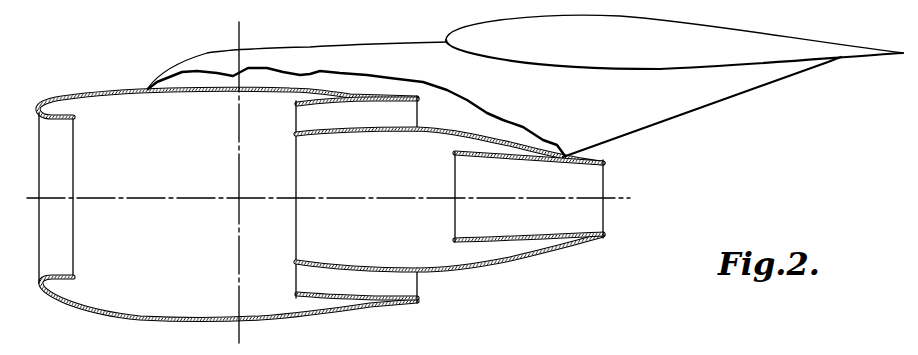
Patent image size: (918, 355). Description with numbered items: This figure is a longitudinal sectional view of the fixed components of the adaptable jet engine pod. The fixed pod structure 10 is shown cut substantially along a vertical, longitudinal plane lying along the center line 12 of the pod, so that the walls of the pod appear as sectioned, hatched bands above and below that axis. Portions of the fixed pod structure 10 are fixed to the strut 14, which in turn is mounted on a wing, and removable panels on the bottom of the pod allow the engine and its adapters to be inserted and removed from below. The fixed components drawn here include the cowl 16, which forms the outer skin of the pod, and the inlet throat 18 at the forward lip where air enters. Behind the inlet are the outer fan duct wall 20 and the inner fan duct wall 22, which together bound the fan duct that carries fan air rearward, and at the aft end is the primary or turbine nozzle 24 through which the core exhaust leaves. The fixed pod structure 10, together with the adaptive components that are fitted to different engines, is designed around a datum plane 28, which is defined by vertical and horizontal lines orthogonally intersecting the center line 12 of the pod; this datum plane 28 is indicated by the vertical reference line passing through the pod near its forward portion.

The fixed pod structure 10 is at (227, 170).
The center line 12 is at (118, 197).
The strut 14 is at (373, 58).
The cowl 16 is at (73, 98).
The inlet throat 18 is at (72, 119).
The outer fan duct wall 20 is at (306, 106).
The inner fan duct wall 22 is at (310, 133).
The primary or turbine nozzle 24 is at (468, 167).
The datum plane 28 is at (240, 32).